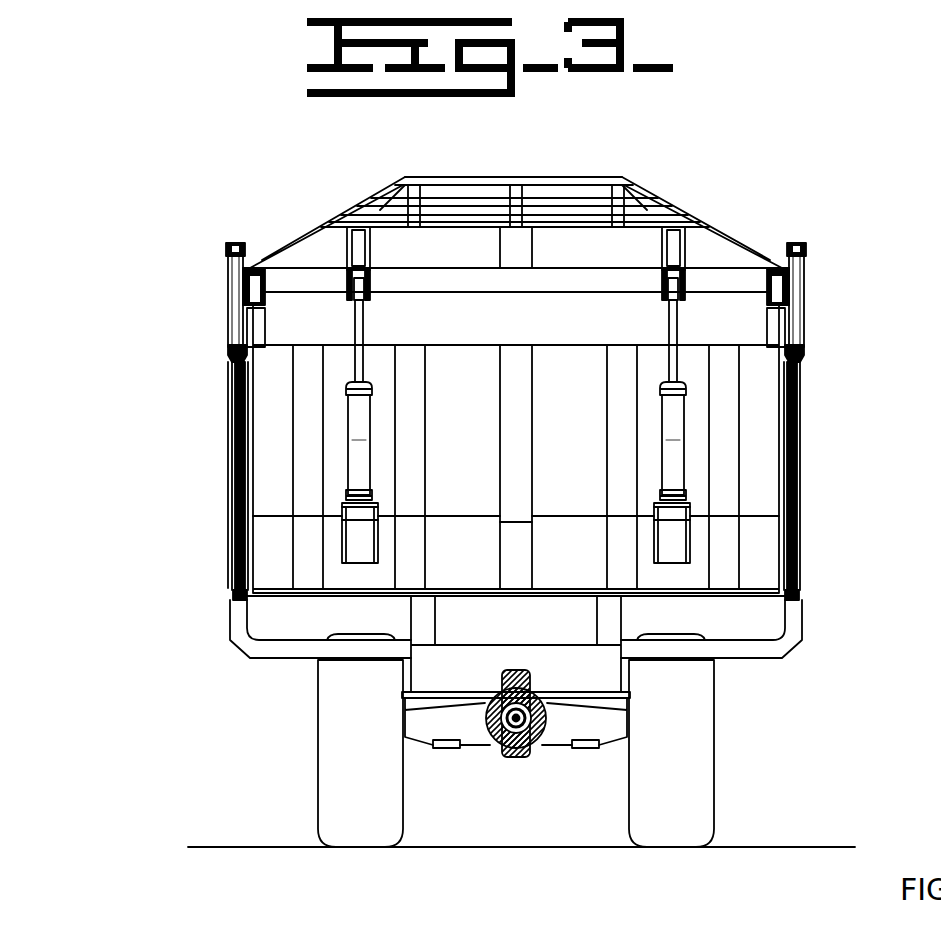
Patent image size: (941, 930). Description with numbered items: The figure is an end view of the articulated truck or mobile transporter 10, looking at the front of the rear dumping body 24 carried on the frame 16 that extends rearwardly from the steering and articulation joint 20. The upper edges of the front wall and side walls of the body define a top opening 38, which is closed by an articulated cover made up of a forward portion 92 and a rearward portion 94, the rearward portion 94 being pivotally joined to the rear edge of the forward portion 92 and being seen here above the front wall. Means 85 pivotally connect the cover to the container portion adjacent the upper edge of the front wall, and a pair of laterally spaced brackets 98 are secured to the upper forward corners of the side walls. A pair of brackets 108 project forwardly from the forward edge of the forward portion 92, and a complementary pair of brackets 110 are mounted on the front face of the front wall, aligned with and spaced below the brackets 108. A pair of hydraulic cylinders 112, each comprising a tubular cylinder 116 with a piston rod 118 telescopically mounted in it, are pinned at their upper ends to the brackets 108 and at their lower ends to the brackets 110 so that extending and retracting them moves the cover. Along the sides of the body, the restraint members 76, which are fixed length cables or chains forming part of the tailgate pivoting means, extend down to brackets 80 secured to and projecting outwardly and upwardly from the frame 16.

The articulated truck or mobile transporter 10 is at (218, 354).
The frame 16 is at (604, 616).
The steering and articulation joint 20 is at (517, 765).
The rear dumping body 24 is at (816, 354).
The top opening 38 is at (560, 284).
The restraint members 76 is at (232, 463).
The brackets 80 is at (232, 630).
The means for pivotally connecting 85 is at (240, 301).
The forward portion 92 is at (448, 286).
The rearward portion 94 is at (578, 186).
The brackets 98 is at (228, 283).
The brackets 108 is at (345, 250).
The brackets 110 is at (350, 303).
The hydraulic cylinders 112 is at (370, 432).
The tubular cylinder 116 is at (370, 465).
The piston rod 118 is at (362, 360).